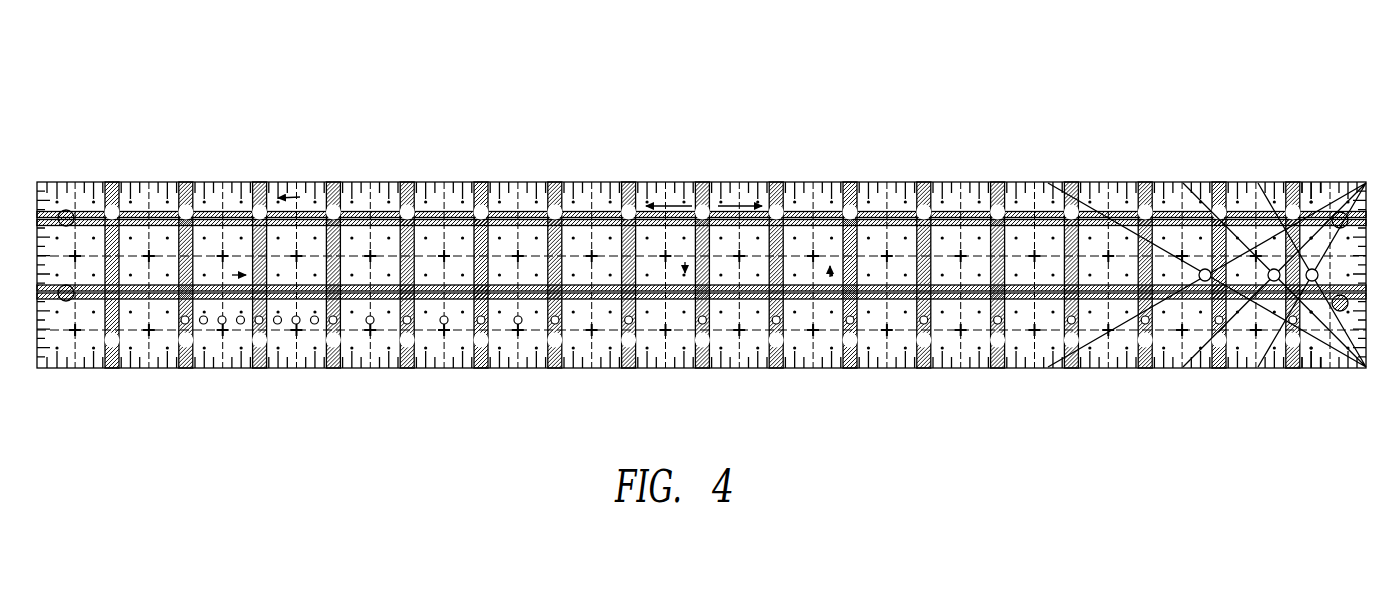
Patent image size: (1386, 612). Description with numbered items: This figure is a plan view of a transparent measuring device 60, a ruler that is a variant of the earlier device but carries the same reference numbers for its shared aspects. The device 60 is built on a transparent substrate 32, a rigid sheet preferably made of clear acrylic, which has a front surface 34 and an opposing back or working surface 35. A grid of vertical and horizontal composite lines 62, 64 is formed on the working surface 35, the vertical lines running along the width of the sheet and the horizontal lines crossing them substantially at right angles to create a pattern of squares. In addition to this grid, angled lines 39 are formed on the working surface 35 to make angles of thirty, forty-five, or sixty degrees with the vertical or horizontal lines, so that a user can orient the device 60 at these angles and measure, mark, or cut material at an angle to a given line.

The measuring device 60 is at (741, 108).
The transparent substrate 32 is at (148, 178).
The front surface 34 is at (234, 200).
The working surface 35 is at (300, 197).
The vertical composite lines 62 is at (338, 249).
The horizontal composite lines 64 is at (428, 213).
The angled lines 39 is at (1203, 188).